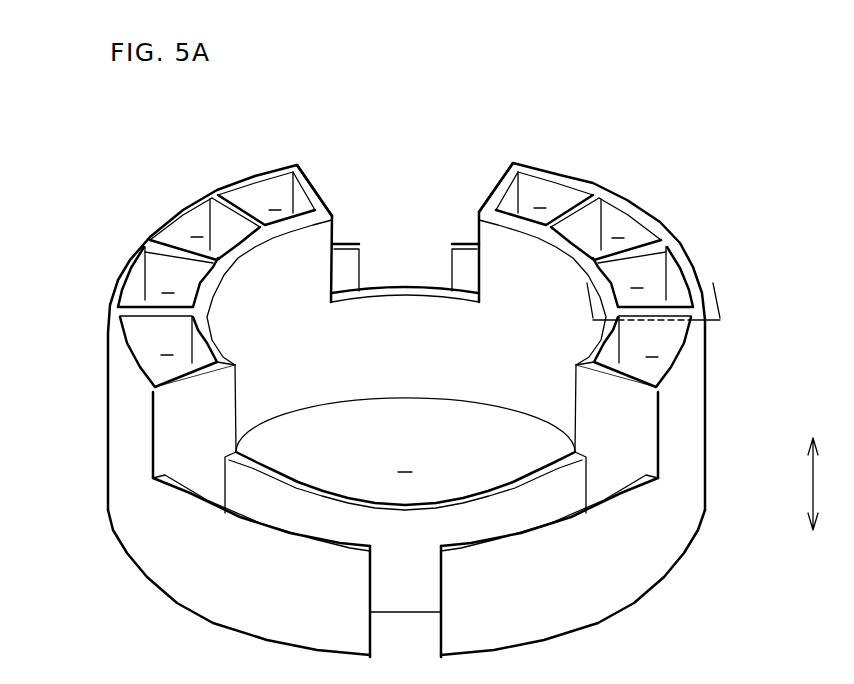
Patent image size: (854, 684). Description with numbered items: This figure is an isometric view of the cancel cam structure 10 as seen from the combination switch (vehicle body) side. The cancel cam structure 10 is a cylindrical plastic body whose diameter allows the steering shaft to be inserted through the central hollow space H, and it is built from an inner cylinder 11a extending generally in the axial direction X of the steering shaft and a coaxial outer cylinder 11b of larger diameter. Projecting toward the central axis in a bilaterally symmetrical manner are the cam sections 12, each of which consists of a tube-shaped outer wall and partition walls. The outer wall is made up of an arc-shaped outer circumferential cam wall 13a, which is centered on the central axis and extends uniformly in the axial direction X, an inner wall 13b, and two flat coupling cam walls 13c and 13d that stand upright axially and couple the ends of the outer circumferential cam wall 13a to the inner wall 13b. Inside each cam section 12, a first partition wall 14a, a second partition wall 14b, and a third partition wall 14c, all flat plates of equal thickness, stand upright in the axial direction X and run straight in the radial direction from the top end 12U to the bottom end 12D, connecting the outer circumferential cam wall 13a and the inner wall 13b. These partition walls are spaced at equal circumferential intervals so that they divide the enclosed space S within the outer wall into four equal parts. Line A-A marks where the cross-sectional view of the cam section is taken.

The cancel cam structure 10 is at (415, 110).
The cam section 12 is at (178, 188).
The top end 12U is at (692, 260).
The bottom end 12D is at (705, 520).
The inner cylinder 11a is at (400, 283).
The outer cylinder 11b is at (177, 553).
The outer circumferential cam wall 13a is at (128, 400).
The inner wall 13b is at (257, 287).
The coupling cam wall 13c is at (311, 183).
The coupling cam wall 13d is at (187, 407).
The first partition wall 14a is at (241, 207).
The second partition wall 14b is at (178, 250).
The third partition wall 14c is at (155, 308).
The enclosed space S is at (409, 272).
The hollow space H is at (405, 454).
The line A- A is at (654, 298).
The axial direction X is at (822, 484).